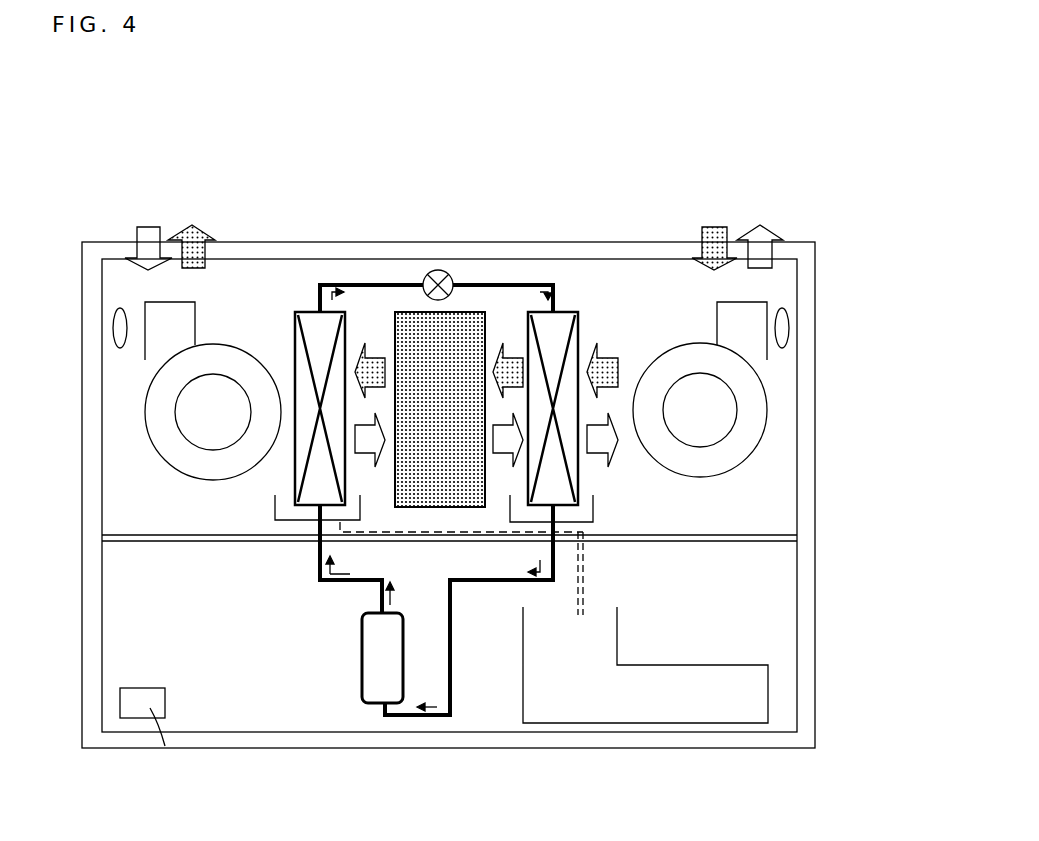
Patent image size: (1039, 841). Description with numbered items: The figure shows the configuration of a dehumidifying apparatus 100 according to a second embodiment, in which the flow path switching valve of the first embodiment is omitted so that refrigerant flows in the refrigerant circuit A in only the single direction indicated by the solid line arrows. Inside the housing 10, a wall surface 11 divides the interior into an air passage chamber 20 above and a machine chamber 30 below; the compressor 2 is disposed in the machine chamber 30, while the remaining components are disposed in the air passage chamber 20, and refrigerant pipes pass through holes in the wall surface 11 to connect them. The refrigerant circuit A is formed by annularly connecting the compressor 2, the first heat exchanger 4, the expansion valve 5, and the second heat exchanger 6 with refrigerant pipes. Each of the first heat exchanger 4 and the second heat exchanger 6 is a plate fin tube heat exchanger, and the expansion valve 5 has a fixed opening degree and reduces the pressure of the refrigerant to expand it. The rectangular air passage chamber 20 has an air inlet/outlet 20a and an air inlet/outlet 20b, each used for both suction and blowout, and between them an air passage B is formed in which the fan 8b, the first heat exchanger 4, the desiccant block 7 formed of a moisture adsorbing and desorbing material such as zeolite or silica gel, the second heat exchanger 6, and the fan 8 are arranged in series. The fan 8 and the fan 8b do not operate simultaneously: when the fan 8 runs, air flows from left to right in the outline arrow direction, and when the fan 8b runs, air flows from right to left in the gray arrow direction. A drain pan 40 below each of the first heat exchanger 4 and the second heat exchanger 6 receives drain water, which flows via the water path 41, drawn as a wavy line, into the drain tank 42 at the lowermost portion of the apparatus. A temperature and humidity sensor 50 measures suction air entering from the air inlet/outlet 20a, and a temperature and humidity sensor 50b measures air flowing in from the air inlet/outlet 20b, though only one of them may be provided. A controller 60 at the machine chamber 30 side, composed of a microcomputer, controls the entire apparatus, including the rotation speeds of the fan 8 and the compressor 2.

The dehumidifying apparatus 100 is at (830, 214).
The housing 10 is at (788, 272).
The air passage B is at (118, 268).
The refrigerant circuit A is at (452, 700).
The air inlet/outlet 20a is at (218, 250).
The air inlet/outlet 20b is at (778, 248).
The air passage chamber 20 is at (782, 383).
The machine chamber 30 is at (762, 630).
The temperature and humidity sensor 50 is at (112, 322).
The temperature and humidity sensor 50b is at (788, 325).
The fan 8 is at (767, 417).
The fan 8b is at (158, 455).
The first heat exchanger 4 is at (296, 330).
The second heat exchanger 6 is at (580, 342).
The desiccant block 7 is at (468, 308).
The expansion valve 5 is at (432, 272).
The compressor 2 is at (360, 642).
The drain pan 40 is at (300, 520).
The water path 41 is at (584, 580).
The drain tank 42 is at (623, 660).
The wall surface 11 is at (755, 540).
The controller 60 is at (150, 748).